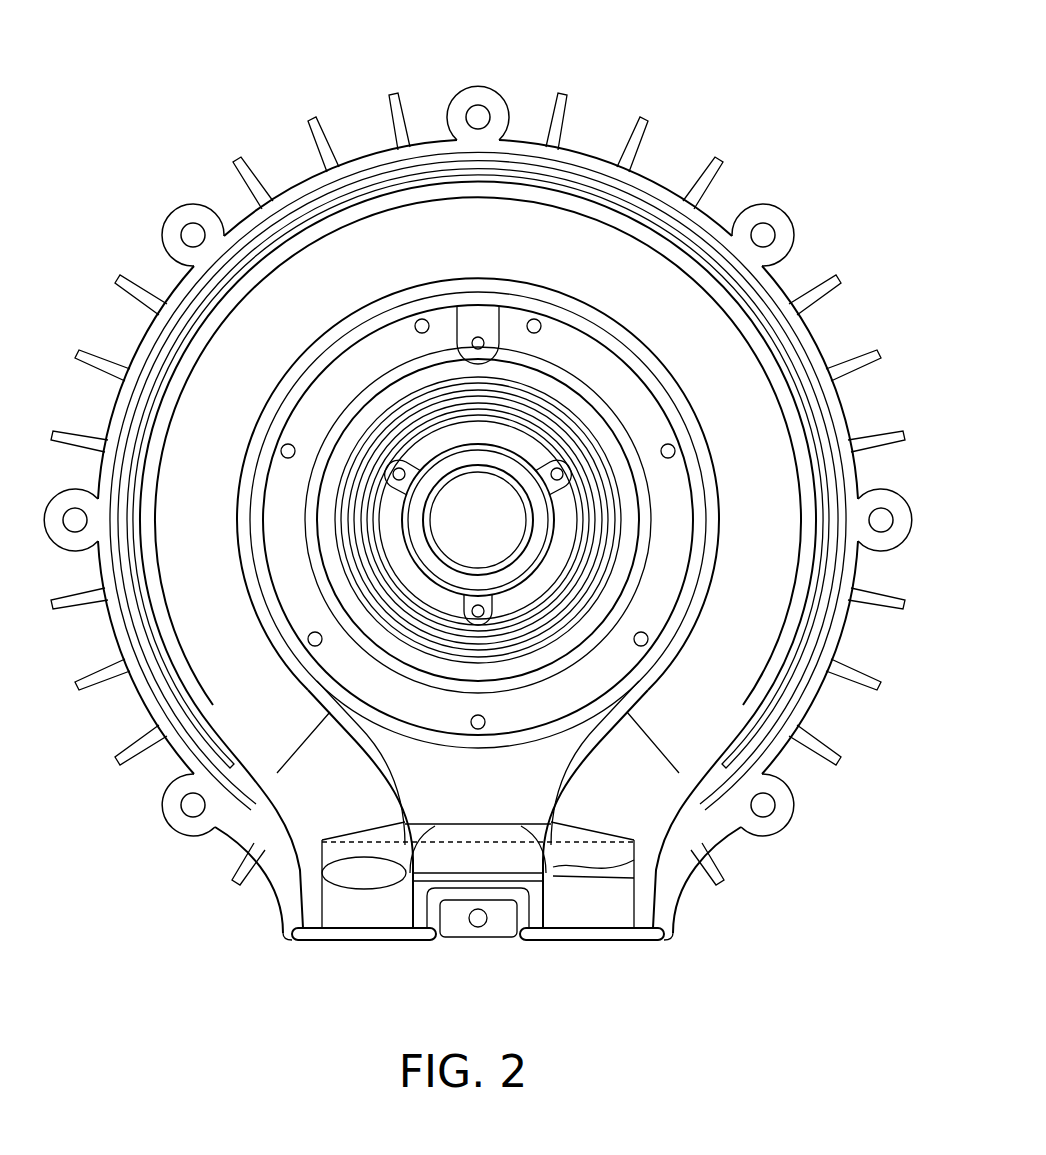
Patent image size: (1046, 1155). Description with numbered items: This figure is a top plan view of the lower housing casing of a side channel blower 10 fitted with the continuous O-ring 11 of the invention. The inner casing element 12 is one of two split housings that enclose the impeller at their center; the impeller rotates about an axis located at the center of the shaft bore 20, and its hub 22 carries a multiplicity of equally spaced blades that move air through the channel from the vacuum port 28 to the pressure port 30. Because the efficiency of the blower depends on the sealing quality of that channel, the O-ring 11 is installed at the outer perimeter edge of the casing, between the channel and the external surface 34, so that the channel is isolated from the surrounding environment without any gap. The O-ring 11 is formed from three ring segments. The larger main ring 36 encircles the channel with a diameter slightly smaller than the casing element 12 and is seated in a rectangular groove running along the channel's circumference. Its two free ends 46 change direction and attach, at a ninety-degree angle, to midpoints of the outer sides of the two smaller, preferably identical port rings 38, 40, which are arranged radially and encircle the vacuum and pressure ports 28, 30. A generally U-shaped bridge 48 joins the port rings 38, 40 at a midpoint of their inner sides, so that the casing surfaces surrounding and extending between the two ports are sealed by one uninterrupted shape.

The side channel blower 10 is at (724, 90).
The O-ring 11 is at (816, 355).
The inner casing element 12 is at (836, 695).
The shaft bore 20 is at (461, 536).
The hub 22 is at (370, 411).
The vacuum port 28 is at (358, 912).
The pressure port 30 is at (587, 912).
The external surface 34 is at (857, 407).
The main ring 36 is at (583, 158).
The port ring 38 is at (627, 934).
The port ring 40 is at (322, 938).
The free ends 46 is at (287, 880).
The U-shaped bridge 48 is at (471, 898).